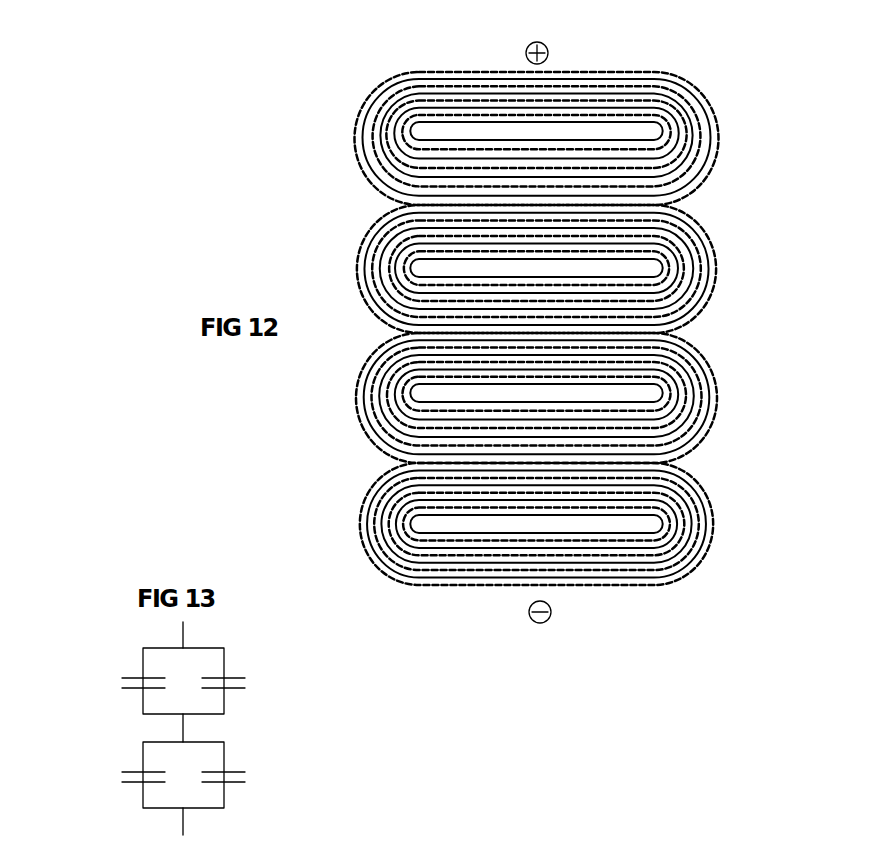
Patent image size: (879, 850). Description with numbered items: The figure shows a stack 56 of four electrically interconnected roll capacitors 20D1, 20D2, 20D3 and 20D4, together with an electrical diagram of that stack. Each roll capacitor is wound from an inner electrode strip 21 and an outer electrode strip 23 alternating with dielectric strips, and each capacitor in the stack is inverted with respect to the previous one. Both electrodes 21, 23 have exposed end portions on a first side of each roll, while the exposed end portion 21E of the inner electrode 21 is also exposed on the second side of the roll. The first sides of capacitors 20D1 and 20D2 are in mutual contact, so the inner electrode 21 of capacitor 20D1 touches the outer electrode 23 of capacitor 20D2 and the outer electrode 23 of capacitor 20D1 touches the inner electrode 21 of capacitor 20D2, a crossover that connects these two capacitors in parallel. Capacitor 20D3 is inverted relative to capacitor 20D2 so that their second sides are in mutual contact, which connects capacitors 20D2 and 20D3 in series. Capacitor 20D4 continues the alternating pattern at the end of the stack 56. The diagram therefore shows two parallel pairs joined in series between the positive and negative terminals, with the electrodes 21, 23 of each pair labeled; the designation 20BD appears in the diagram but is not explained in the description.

In FIG. 12, the stack 56 is at (585, 304).
In FIG. 12, the roll capacitor 20D1 is at (742, 107).
In FIG. 13, the roll capacitor 20D1 is at (100, 683).
In FIG. 12, the roll capacitor 20D2 is at (742, 236).
In FIG. 13, the roll capacitor 20D2 is at (270, 683).
In FIG. 12, the roll capacitor 20D3 is at (744, 367).
In FIG. 12, the roll capacitor 20D4 is at (742, 497).
In FIG. 13, the roll capacitor 20D4 is at (270, 777).
In FIG. 13, the capacitor element 20BD is at (100, 777).
In FIG. 12, the inner electrode strip 21 is at (380, 122).
In FIG. 13, the inner electrode strip 21 is at (130, 674).
In FIG. 12, the exposed end portion 21E is at (472, 70).
In FIG. 12, the outer electrode strip 23 is at (638, 78).
In FIG. 13, the outer electrode strip 23 is at (238, 674).